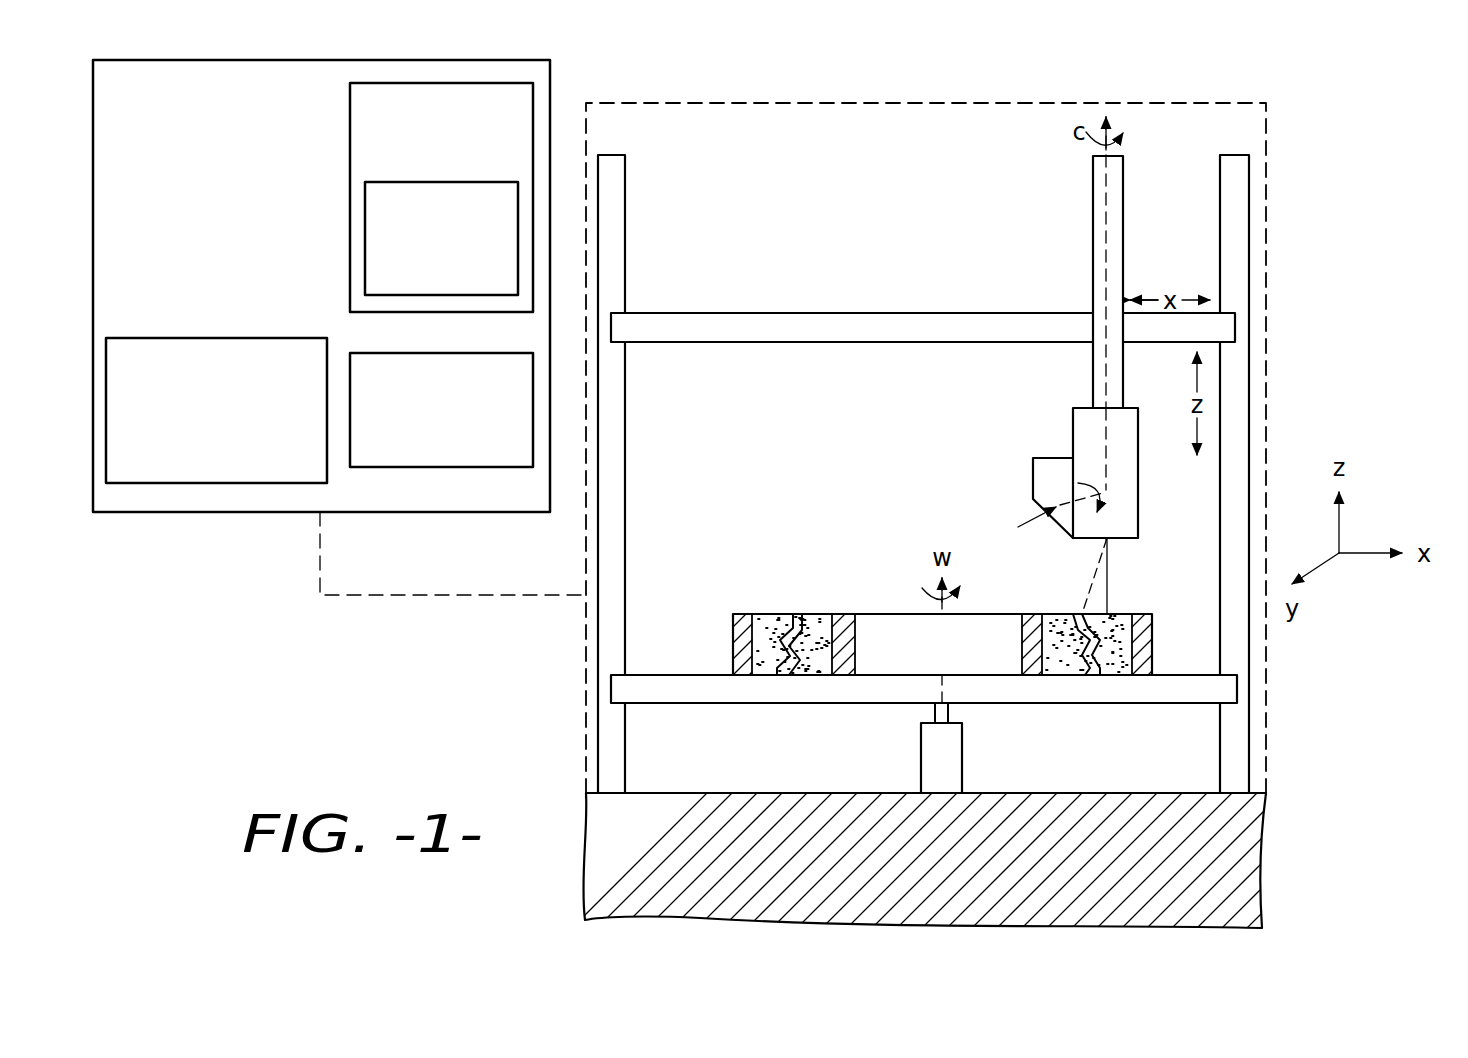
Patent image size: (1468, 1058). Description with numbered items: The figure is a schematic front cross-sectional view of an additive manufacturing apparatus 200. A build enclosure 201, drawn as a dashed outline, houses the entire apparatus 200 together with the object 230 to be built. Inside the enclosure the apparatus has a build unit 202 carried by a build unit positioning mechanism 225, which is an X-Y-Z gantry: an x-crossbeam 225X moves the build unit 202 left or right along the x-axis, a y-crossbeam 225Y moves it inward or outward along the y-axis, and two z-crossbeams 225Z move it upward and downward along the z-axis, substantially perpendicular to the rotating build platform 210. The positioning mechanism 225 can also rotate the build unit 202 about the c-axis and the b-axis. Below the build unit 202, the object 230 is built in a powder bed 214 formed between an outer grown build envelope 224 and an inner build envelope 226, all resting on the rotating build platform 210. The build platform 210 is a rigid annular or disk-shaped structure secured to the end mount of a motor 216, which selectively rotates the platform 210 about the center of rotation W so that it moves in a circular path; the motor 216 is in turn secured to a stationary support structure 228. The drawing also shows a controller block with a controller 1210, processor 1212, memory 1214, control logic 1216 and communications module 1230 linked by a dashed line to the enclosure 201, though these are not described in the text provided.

The additive manufacturing apparatus 200 is at (1366, 138).
The build enclosure 201 is at (755, 98).
The build unit 202 is at (1078, 425).
The rotating build platform 210 is at (1175, 690).
The powder bed 214 is at (1120, 612).
The motor 216 is at (948, 752).
The outer grown build envelope 224 is at (740, 647).
The build unit positioning mechanism 225 is at (1239, 146).
The x-crossbeam 225X is at (1238, 325).
The y-crossbeam 225Y is at (1100, 238).
The z-crossbeam 225Z is at (610, 238).
The inner build envelope 226 is at (848, 630).
The stationary support structure 228 is at (1228, 865).
The object 230 is at (797, 610).
The controller 1210 is at (182, 226).
The processor 1212 is at (410, 440).
The memory 1214 is at (410, 165).
The control logic 1216 is at (410, 280).
The communications module 1230 is at (187, 457).